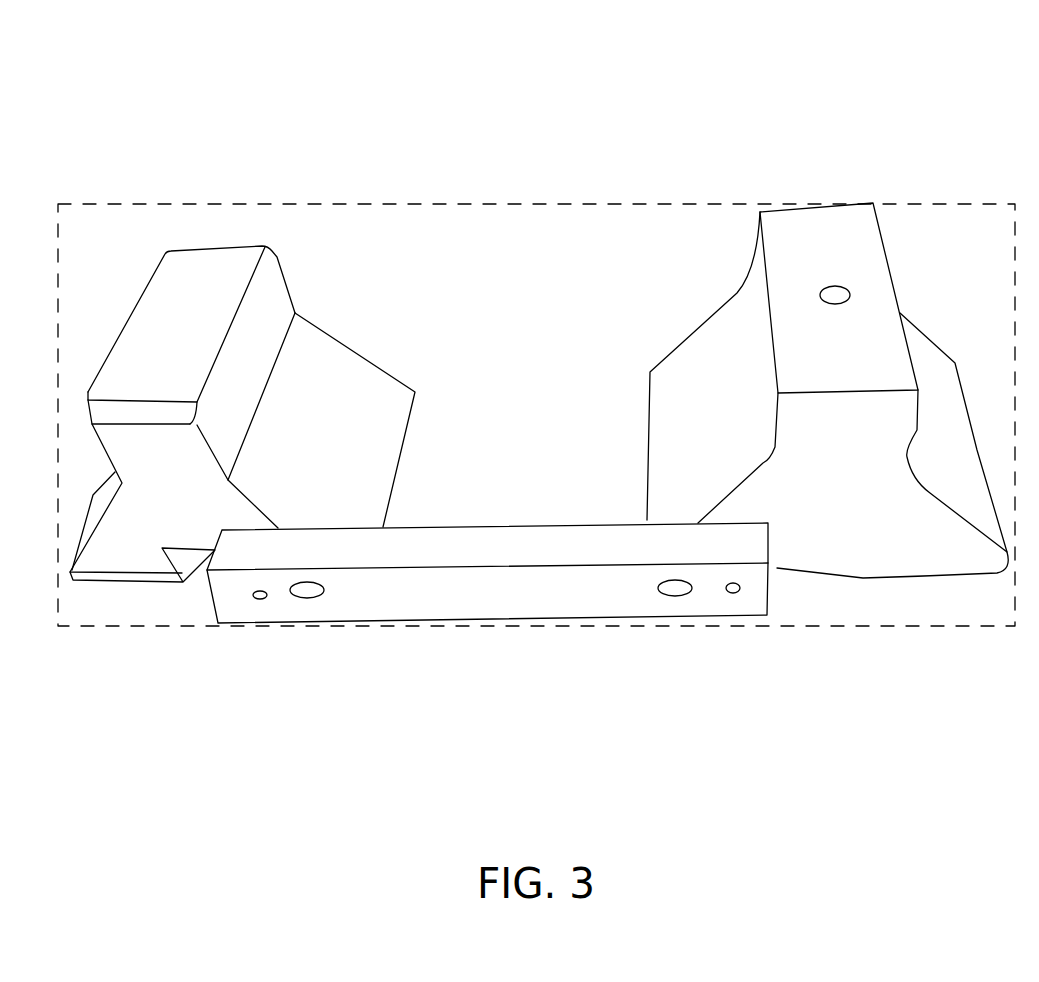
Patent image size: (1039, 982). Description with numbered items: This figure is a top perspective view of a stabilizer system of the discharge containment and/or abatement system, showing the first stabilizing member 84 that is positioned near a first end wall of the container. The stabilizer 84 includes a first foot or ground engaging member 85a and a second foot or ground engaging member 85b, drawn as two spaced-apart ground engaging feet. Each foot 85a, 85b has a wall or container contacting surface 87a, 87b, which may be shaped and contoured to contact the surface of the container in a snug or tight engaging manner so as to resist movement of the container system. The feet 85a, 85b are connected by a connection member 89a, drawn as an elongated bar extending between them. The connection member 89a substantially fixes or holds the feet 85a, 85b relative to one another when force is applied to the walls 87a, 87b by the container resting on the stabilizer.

The first stabilizing member 84 is at (490, 657).
The first foot or ground engaging member 85a is at (210, 242).
The second foot or ground engaging member 85b is at (810, 203).
The container contacting surface 87a is at (340, 335).
The container contacting surface 87b is at (710, 307).
The connection member 89a is at (572, 572).